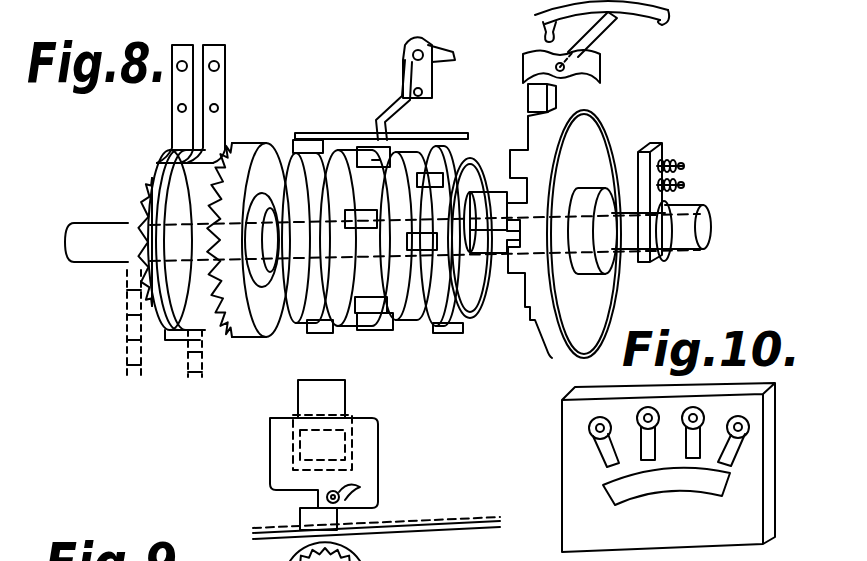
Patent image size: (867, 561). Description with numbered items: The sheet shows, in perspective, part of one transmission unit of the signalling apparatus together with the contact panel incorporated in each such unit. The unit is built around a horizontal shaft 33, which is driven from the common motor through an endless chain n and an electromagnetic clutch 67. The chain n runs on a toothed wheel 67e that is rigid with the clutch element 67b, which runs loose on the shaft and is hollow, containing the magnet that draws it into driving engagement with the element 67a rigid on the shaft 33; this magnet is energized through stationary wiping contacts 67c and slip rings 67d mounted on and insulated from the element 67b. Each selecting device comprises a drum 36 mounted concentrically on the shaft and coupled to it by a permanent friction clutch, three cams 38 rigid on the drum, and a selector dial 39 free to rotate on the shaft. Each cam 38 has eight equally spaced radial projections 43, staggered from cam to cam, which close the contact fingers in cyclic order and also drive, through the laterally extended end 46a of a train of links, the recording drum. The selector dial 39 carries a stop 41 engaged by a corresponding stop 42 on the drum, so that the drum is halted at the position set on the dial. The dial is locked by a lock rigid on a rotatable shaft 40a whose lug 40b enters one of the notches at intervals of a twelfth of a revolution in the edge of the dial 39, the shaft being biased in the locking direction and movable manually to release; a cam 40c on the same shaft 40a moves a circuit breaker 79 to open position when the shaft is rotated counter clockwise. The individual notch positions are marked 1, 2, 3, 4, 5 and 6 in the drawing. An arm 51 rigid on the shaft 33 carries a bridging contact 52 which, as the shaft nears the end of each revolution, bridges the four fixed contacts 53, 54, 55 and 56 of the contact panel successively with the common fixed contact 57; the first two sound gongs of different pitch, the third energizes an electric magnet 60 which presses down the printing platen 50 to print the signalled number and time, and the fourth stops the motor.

In FIG. 8, the toothed wheel 67e is at (125, 265).
In FIG. 8, the loose clutch element 67b is at (210, 193).
In FIG. 8, the stationary wiping contacts 67c is at (212, 54).
In FIG. 8, the electromagnetic clutch 67 is at (227, 337).
In FIG. 8, the rigid clutch element 67a is at (264, 165).
In FIG. 8, the slip rings 67d is at (175, 313).
In FIG. 8, the endless chain n is at (128, 350).
In FIG. 8, the radial projections 43 is at (293, 287).
In FIG. 8, the cams 38 is at (317, 142).
In FIG. 8, the drum 36 is at (430, 172).
In FIG. 8, the stop 41 is at (497, 225).
In FIG. 8, the stop 42 is at (478, 165).
In FIG. 8, the lug 40b is at (527, 93).
In FIG. 8, the end of link train 46a is at (357, 133).
In FIG. 8, the rotatable shaft 40a is at (593, 57).
In FIG. 8, the cam 40c is at (593, 37).
In FIG. 8, the circuit breaker 79 is at (668, 12).
In FIG. 8, the selector dial 39 is at (552, 347).
In FIG. 8, the step 1 is at (540, 126).
In FIG. 8, the step 2 is at (522, 165).
In FIG. 8, the step 3 is at (514, 219).
In FIG. 8, the step 4 is at (514, 258).
In FIG. 8, the step 5 is at (523, 291).
In FIG. 8, the step 6 is at (535, 331).
In FIG. 8, the horizontal shaft 33 is at (703, 222).
In FIG. 8, the arm 51 is at (663, 262).
In FIG. 8, the bridging contact 52 is at (684, 186).
In FIG. 8, the electric magnet 60 is at (310, 393).
In FIG. 8, the printing platen 50 is at (310, 513).
In FIG. 10, the fixed contact 53 is at (590, 430).
In FIG. 10, the fixed contact 54 is at (638, 428).
In FIG. 10, the fixed contact 55 is at (702, 425).
In FIG. 10, the fixed contact 56 is at (742, 435).
In FIG. 10, the common fixed contact 57 is at (658, 487).